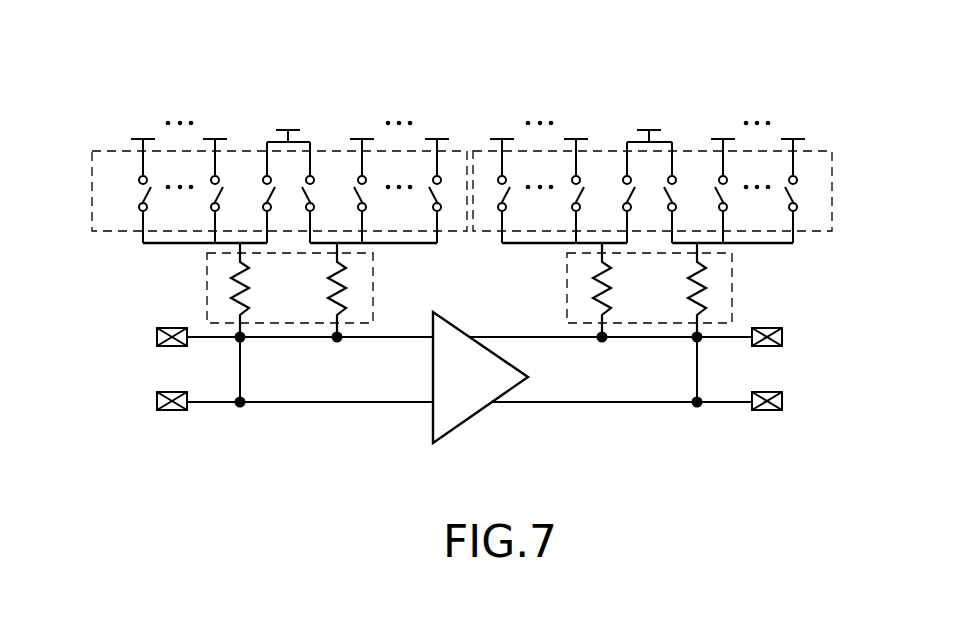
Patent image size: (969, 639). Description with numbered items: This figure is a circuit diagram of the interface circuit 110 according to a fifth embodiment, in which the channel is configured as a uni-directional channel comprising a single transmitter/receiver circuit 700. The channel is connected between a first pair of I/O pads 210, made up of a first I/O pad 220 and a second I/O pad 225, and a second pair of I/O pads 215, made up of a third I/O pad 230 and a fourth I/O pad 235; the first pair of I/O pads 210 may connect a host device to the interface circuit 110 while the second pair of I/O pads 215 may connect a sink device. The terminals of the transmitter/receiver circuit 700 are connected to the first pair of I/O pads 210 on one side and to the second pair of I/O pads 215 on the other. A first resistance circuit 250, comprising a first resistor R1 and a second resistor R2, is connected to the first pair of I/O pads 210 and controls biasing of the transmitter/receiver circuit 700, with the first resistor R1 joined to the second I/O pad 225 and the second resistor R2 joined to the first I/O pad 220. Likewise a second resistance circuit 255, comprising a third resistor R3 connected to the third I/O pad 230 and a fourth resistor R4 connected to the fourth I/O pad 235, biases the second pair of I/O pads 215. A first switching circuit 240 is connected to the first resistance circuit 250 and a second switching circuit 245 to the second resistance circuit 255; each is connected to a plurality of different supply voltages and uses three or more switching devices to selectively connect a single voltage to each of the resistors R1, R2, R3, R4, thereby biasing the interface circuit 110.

The interface circuit 110 is at (776, 59).
The first switching circuit 240 is at (91, 174).
The second switching circuit 245 is at (833, 185).
The first resistance circuit 250 is at (373, 264).
The second resistance circuit 255 is at (732, 266).
The first resistor R1 is at (250, 283).
The second resistor R2 is at (333, 305).
The third resistor R3 is at (612, 285).
The fourth resistor R4 is at (688, 303).
The first pair of I/O pads 210 is at (155, 320).
The first I/O pad 220 is at (170, 326).
The second I/O pad 225 is at (168, 412).
The second pair of I/O pads 215 is at (788, 320).
The third I/O pad 230 is at (766, 326).
The fourth I/O pad 235 is at (765, 413).
The transmitter/receiver circuit 700 is at (472, 417).